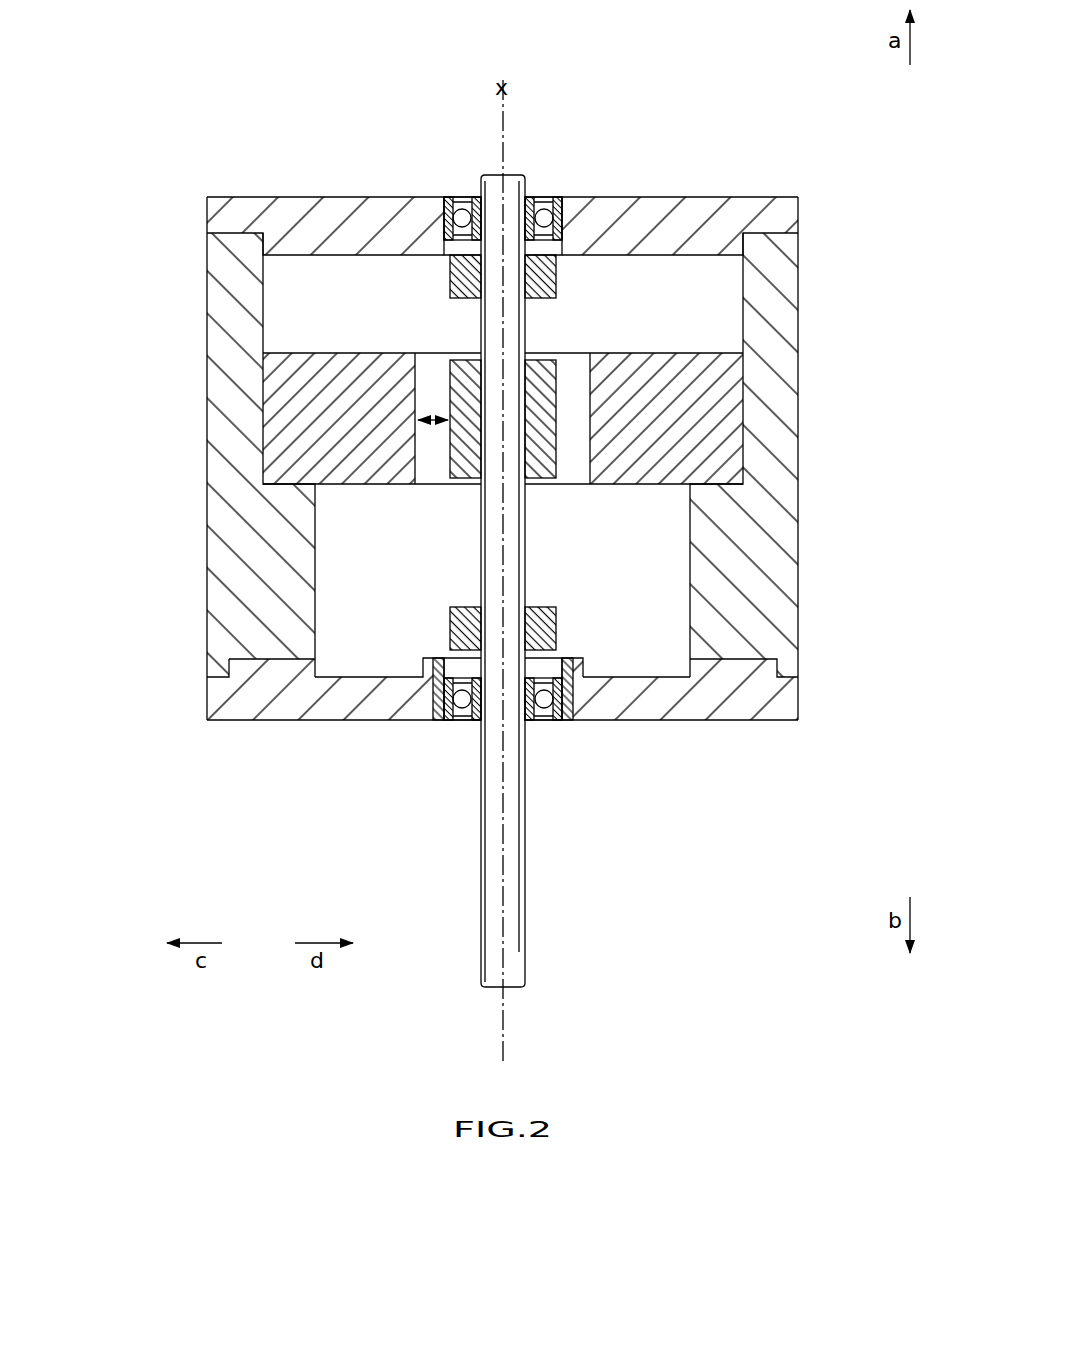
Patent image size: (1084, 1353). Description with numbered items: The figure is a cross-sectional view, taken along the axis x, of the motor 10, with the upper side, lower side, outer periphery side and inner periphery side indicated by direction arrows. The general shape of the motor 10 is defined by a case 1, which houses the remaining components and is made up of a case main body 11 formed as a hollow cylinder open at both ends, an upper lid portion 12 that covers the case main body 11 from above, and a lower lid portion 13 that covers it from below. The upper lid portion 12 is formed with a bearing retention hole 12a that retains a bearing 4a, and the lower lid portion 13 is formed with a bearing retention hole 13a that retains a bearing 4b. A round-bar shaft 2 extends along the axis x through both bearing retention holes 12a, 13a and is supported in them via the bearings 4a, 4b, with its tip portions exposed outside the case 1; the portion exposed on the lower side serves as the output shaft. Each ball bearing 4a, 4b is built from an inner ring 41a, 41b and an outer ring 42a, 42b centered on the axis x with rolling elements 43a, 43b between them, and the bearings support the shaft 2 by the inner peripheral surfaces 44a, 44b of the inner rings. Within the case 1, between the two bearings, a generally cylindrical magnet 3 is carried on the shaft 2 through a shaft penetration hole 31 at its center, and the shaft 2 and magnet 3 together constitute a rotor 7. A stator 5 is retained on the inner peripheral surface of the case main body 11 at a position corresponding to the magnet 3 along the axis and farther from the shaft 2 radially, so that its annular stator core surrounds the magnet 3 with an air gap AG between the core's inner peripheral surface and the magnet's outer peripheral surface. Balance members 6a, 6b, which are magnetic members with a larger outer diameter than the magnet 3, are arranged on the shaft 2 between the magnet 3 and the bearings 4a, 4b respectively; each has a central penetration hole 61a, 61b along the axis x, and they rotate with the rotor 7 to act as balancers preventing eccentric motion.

The case 1 is at (440, 461).
The shaft 2 is at (513, 328).
The magnet 3 is at (543, 377).
The bearing 4a is at (428, 120).
The bearing 4b is at (590, 791).
The stator 5 is at (295, 383).
The balance member 6a is at (436, 214).
The balance member 6b is at (438, 688).
The rotor 7 is at (667, 572).
The motor 10 is at (483, 532).
The case main body 11 is at (237, 486).
The upper lid portion 12 is at (237, 217).
The bearing retention hole 12a is at (546, 211).
The lower lid portion 13 is at (237, 703).
The bearing retention hole 13a is at (448, 722).
The shaft penetration hole 31 is at (520, 441).
The inner ring 41a is at (477, 210).
The outer ring 42a is at (447, 208).
The rolling element 43a is at (460, 207).
The inner peripheral surface 44a is at (503, 135).
The inner ring 41b is at (528, 712).
The outer ring 42b is at (562, 712).
The rolling element 43b is at (545, 712).
The inner peripheral surface 44b is at (516, 774).
The penetration hole 61a is at (483, 280).
The penetration hole 61b is at (490, 620).
The air gap AG is at (435, 414).